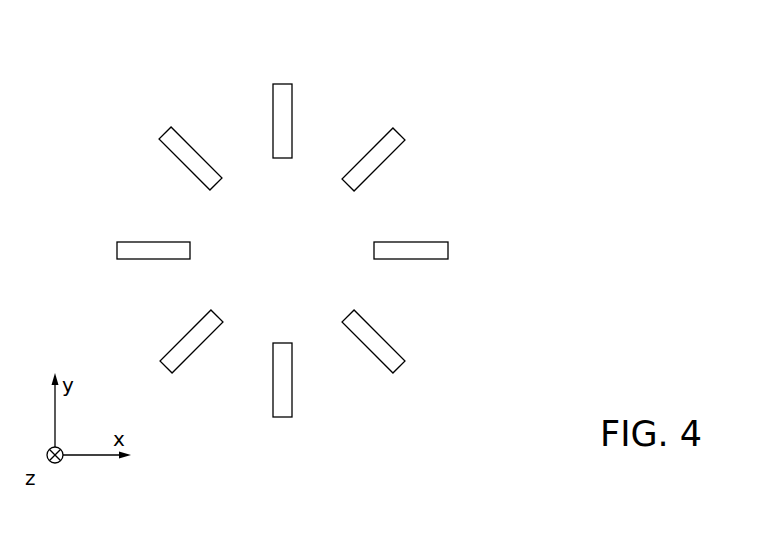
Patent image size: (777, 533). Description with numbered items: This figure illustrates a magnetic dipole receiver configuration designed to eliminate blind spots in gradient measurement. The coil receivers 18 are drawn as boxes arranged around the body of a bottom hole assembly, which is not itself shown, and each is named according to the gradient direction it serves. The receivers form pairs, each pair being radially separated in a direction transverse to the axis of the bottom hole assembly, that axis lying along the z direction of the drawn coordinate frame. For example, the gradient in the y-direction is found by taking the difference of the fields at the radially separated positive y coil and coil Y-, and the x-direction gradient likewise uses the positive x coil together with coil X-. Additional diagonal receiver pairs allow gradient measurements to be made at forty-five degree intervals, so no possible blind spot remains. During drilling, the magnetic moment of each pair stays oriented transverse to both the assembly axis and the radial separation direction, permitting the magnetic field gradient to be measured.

The coil receivers 18 is at (99, 72).
The coil Y- is at (305, 386).
The coil X- is at (153, 235).